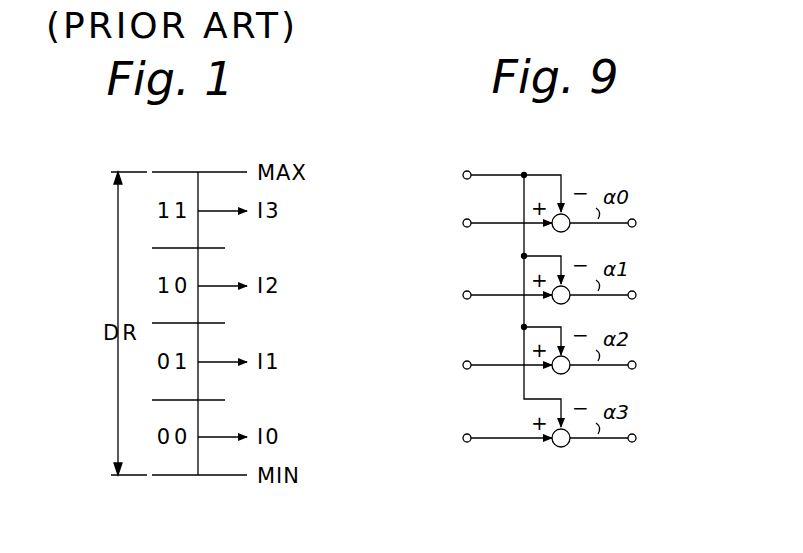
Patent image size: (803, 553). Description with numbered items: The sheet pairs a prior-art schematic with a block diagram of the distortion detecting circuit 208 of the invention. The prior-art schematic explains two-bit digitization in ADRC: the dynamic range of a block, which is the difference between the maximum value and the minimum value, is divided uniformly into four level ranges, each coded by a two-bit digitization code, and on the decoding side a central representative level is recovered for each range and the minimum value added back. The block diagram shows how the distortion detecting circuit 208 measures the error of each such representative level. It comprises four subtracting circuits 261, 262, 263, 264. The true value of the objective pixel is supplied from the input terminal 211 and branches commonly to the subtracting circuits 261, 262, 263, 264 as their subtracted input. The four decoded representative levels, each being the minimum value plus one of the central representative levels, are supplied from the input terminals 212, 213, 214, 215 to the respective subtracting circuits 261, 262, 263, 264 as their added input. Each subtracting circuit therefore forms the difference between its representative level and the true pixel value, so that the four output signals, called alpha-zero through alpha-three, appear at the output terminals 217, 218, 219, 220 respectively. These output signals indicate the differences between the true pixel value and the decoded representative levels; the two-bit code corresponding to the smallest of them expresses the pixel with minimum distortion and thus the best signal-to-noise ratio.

The distortion detecting circuit 208 is at (556, 165).
The input terminal 211 is at (463, 175).
The input terminal 212 is at (463, 223).
The input terminal 213 is at (463, 295).
The input terminal 214 is at (463, 365).
The input terminal 215 is at (463, 438).
The output terminal 217 is at (636, 223).
The output terminal 218 is at (636, 295).
The output terminal 219 is at (636, 365).
The output terminal 220 is at (636, 438).
The subtracting circuit 261 is at (567, 229).
The subtracting circuit 262 is at (567, 301).
The subtracting circuit 263 is at (567, 371).
The subtracting circuit 264 is at (567, 444).